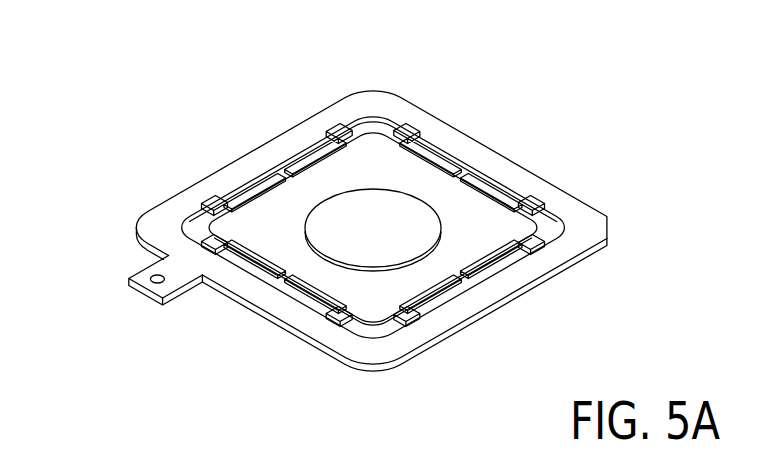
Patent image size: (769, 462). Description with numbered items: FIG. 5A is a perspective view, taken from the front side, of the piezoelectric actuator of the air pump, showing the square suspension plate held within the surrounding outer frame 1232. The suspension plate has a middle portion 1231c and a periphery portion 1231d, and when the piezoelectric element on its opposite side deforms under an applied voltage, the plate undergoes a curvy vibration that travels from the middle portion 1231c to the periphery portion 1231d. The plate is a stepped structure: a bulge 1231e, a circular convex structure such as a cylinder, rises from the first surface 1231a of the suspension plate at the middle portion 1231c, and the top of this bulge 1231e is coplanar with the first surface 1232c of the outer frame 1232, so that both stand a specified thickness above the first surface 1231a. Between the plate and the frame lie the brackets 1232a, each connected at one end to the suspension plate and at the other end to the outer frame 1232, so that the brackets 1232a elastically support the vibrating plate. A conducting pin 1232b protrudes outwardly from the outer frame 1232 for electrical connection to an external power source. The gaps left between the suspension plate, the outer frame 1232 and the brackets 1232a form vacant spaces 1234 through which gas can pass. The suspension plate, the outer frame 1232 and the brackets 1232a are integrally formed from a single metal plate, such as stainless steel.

The first surface of the suspension plate 1231a is at (515, 225).
The middle portion of the suspension plate 1231c is at (389, 209).
The periphery portion of the suspension plate 1231d is at (472, 220).
The bulge 1231e is at (347, 220).
The outer frame 1232 is at (493, 168).
The bracket 1232a is at (458, 276).
The conducting pin 1232b is at (150, 278).
The first surface of the outer frame 1232c is at (411, 100).
The vacant space 1234 is at (352, 127).